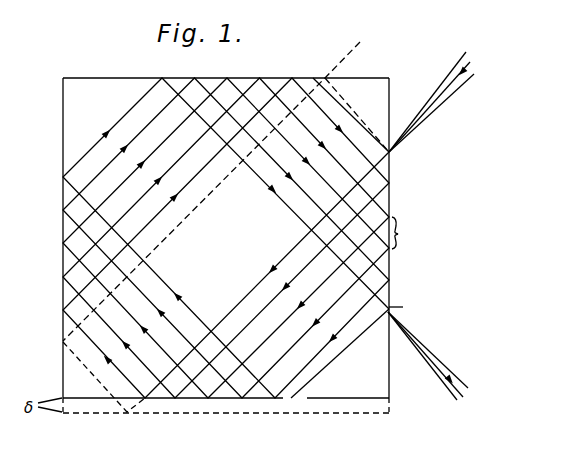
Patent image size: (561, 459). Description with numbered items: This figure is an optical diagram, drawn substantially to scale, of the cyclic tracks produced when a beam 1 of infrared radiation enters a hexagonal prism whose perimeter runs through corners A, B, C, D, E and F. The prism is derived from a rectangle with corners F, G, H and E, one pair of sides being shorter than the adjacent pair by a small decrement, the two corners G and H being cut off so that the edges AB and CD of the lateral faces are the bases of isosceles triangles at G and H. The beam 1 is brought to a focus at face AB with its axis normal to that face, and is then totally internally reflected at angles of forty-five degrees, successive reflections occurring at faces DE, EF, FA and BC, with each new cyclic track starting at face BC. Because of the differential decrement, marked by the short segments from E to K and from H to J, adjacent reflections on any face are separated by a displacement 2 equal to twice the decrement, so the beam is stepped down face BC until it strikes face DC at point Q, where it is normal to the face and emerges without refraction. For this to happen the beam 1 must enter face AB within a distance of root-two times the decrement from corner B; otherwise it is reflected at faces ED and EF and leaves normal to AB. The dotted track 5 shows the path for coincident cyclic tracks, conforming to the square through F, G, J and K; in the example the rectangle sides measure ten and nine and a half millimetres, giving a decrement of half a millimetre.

The beam 1 is at (423, 117).
The track 5 is at (66, 353).
The displacement 2δ 2 is at (408, 233).
The vertex A of hexagonal prism A is at (226, 191).
The vertex B of hexagonal prism B is at (361, 127).
The vertex C of hexagonal prism C is at (428, 343).
The vertex D of hexagonal prism D is at (338, 362).
The corner E of rectangle E is at (217, 392).
The corner F of rectangle F is at (61, 225).
The corner G of rectangle G is at (235, 71).
The corner H of rectangle H is at (398, 242).
The point J is at (393, 414).
The point K is at (217, 412).
The point Q is at (404, 305).